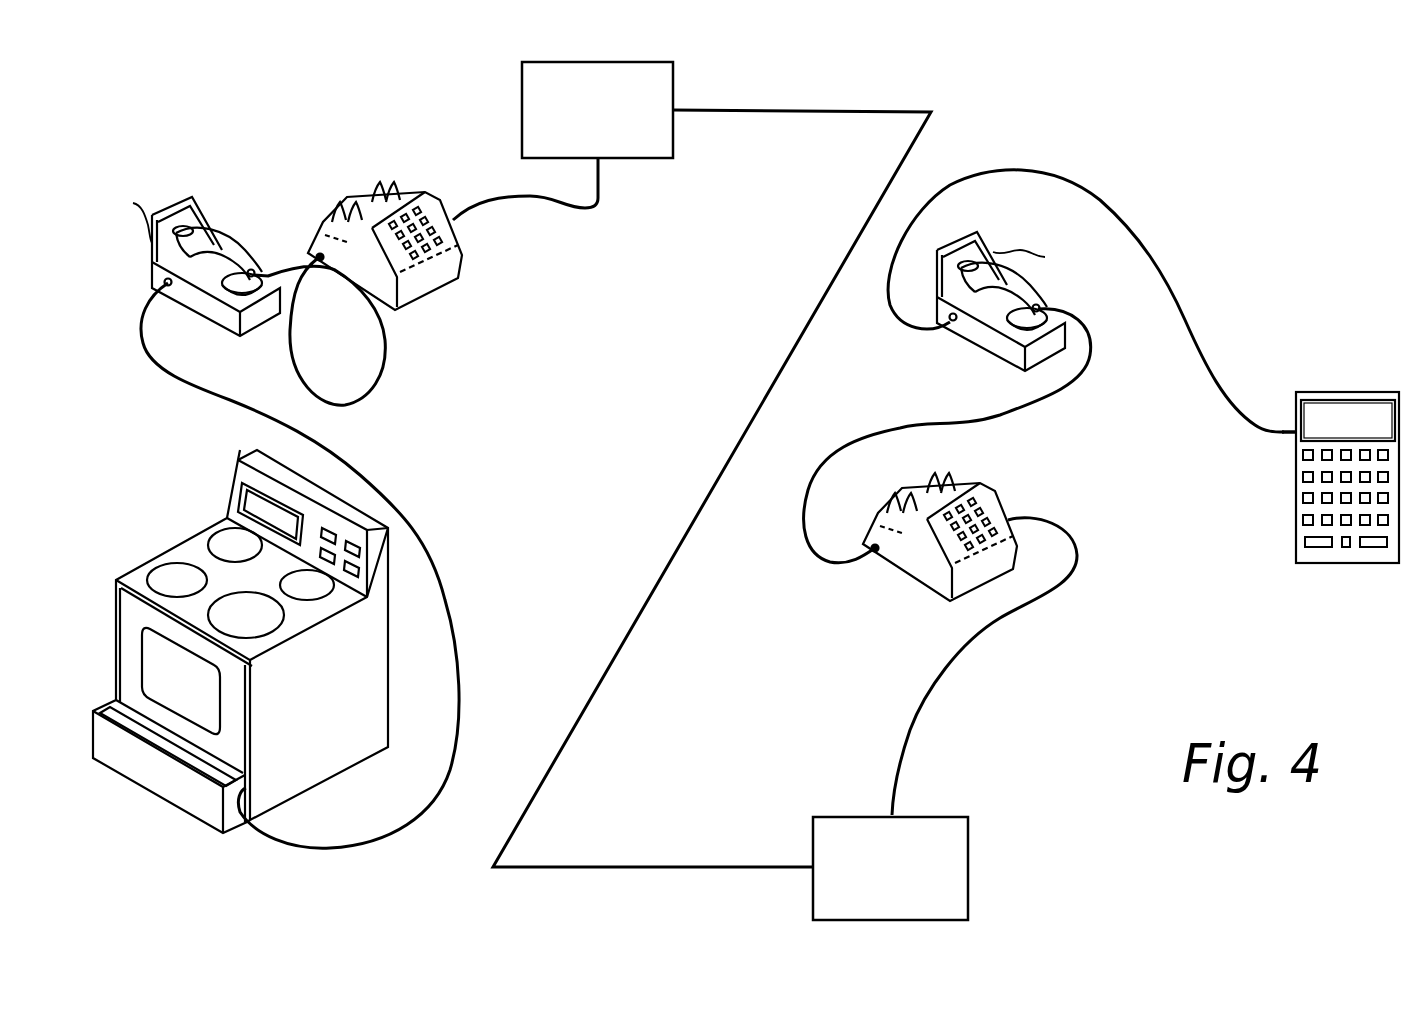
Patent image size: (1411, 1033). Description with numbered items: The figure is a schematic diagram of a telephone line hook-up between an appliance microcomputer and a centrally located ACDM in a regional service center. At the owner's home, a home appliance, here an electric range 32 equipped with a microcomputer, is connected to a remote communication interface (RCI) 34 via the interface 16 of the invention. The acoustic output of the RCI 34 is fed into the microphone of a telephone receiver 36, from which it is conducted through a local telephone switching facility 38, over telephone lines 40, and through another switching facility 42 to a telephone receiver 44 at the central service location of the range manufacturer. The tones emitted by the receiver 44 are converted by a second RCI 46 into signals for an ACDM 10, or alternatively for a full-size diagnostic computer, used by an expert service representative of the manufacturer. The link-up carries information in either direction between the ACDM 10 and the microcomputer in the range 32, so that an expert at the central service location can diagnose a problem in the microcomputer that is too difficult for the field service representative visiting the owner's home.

The ACDM 10 is at (1320, 561).
The interface 16 is at (380, 488).
The electric range 32 is at (188, 542).
The remote communication interface (RCI) 34 is at (208, 222).
The telephone receiver 36 is at (362, 194).
The local telephone switching facility 38 is at (525, 96).
The telephone lines 40 is at (735, 444).
The switching facility 42 is at (968, 867).
The telephone receiver 44 is at (925, 585).
The second RCI 46 is at (985, 352).